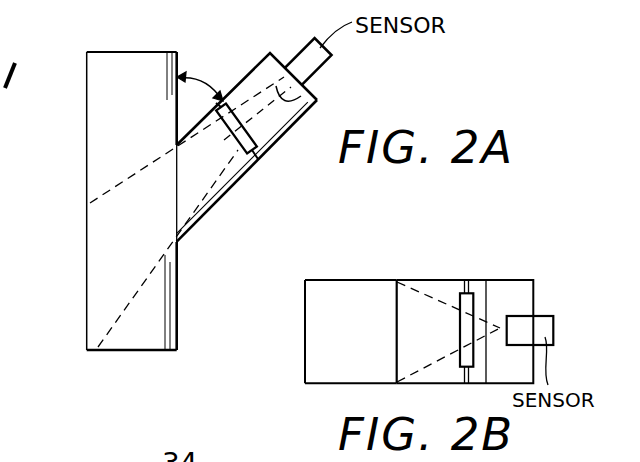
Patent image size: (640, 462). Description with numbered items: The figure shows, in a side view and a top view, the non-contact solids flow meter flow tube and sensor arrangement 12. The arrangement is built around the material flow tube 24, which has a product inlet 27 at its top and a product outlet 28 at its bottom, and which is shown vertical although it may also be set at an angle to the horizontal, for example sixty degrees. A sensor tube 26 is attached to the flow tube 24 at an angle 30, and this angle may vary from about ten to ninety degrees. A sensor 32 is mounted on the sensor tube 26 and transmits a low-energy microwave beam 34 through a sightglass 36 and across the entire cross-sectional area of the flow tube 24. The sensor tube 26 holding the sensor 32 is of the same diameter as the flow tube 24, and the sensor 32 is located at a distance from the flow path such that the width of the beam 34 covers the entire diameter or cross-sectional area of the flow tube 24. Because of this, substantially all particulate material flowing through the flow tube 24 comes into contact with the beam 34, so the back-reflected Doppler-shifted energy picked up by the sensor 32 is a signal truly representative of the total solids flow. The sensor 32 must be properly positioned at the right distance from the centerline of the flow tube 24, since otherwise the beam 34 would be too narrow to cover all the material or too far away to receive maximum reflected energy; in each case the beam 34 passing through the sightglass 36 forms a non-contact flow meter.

In FIG. 2A, the flow tube and sensor arrangement 12 is at (224, 40).
In FIG. 2B, the flow tube and sensor arrangement 12 is at (475, 250).
In FIG. 2A, the flow tube 24 is at (86, 157).
In FIG. 2B, the flow tube 24 is at (305, 305).
In FIG. 2A, the sensor tube 26 is at (213, 205).
In FIG. 2B, the sensor tube 26 is at (427, 282).
In FIG. 2A, the product inlet 27 is at (129, 52).
In FIG. 2B, the product inlet 27 is at (357, 340).
In FIG. 2A, the product outlet 28 is at (137, 352).
In FIG. 2A, the angle 30 is at (206, 82).
In FIG. 2A, the sensor 32 is at (305, 60).
In FIG. 2B, the sensor 32 is at (542, 326).
In FIG. 2A, the low-energy microwave beam 34 is at (311, 87).
In FIG. 2B, the low-energy microwave beam 34 is at (486, 323).
In FIG. 2A, the sightglass 36 is at (251, 152).
In FIG. 2B, the sightglass 36 is at (460, 334).